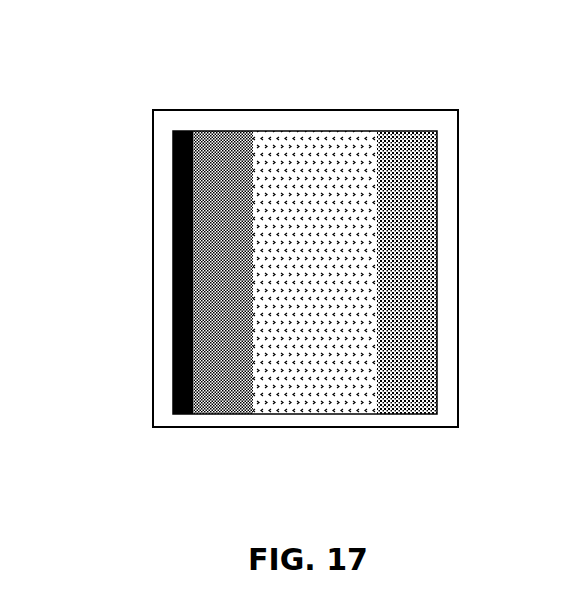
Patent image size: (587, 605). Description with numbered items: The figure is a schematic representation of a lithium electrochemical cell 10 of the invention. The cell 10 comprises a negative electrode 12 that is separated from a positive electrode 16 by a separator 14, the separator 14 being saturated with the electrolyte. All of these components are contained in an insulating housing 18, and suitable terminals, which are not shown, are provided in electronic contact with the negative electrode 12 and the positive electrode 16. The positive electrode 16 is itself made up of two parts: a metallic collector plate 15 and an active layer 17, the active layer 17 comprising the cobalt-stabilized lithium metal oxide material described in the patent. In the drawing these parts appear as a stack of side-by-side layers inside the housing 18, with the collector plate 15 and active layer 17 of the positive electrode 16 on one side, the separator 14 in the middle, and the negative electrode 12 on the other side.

The lithium electrochemical cell 10 is at (102, 248).
The negative electrode 12 is at (417, 145).
The separator 14 is at (297, 152).
The metallic collector plate 15 is at (172, 130).
The positive electrode 16 is at (212, 118).
The active layer 17 is at (234, 148).
The insulating housing 18 is at (458, 168).